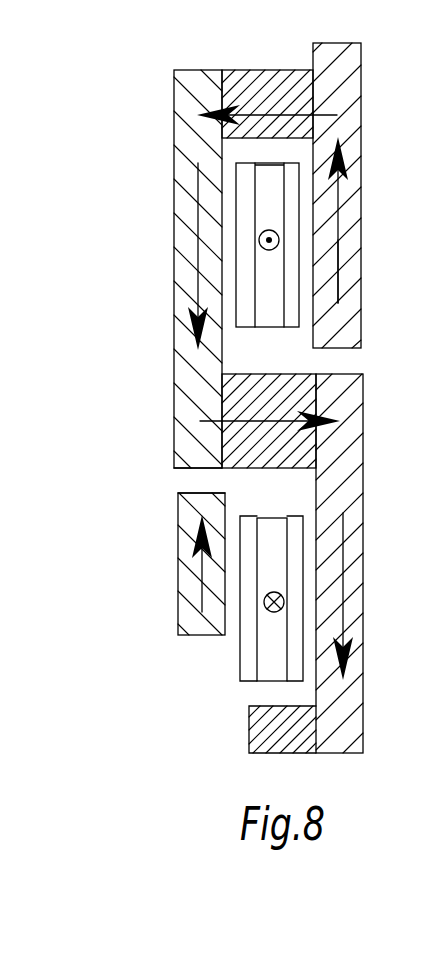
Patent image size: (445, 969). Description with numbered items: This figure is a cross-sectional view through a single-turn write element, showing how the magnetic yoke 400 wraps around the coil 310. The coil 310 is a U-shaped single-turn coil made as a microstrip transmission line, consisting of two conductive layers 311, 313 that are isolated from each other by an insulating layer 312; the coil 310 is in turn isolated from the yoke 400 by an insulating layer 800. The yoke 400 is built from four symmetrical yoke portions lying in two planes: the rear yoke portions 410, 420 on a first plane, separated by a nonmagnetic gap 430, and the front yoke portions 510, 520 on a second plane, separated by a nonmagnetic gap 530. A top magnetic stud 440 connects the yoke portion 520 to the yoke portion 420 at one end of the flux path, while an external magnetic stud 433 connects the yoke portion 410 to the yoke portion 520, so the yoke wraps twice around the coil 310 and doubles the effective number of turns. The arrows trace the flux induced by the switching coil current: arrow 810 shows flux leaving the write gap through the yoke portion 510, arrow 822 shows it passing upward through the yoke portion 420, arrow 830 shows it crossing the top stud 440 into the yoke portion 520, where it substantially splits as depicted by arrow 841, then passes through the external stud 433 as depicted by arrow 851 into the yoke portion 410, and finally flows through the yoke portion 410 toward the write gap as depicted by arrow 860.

The coil 310 is at (263, 192).
The conductive layer 311 is at (300, 662).
The insulating layer 312 is at (263, 670).
The conductive layer 313 is at (243, 668).
The yoke 400 is at (352, 87).
The yoke portion 410 is at (363, 697).
The yoke portion 420 is at (358, 303).
The nonmagnetic gap 430 is at (355, 361).
The external magnetic stud 433 is at (245, 395).
The magnetic stud 440 is at (283, 78).
The yoke portion 510 is at (183, 618).
The yoke portion 520 is at (180, 197).
The nonmagnetic gap 530 is at (188, 485).
The insulating layer 800 is at (340, 150).
The arrow 810 is at (202, 583).
The arrow 822 is at (343, 240).
The arrow 830 is at (217, 112).
The arrow 841 is at (198, 250).
The arrow 851 is at (317, 413).
The arrow 860 is at (345, 580).